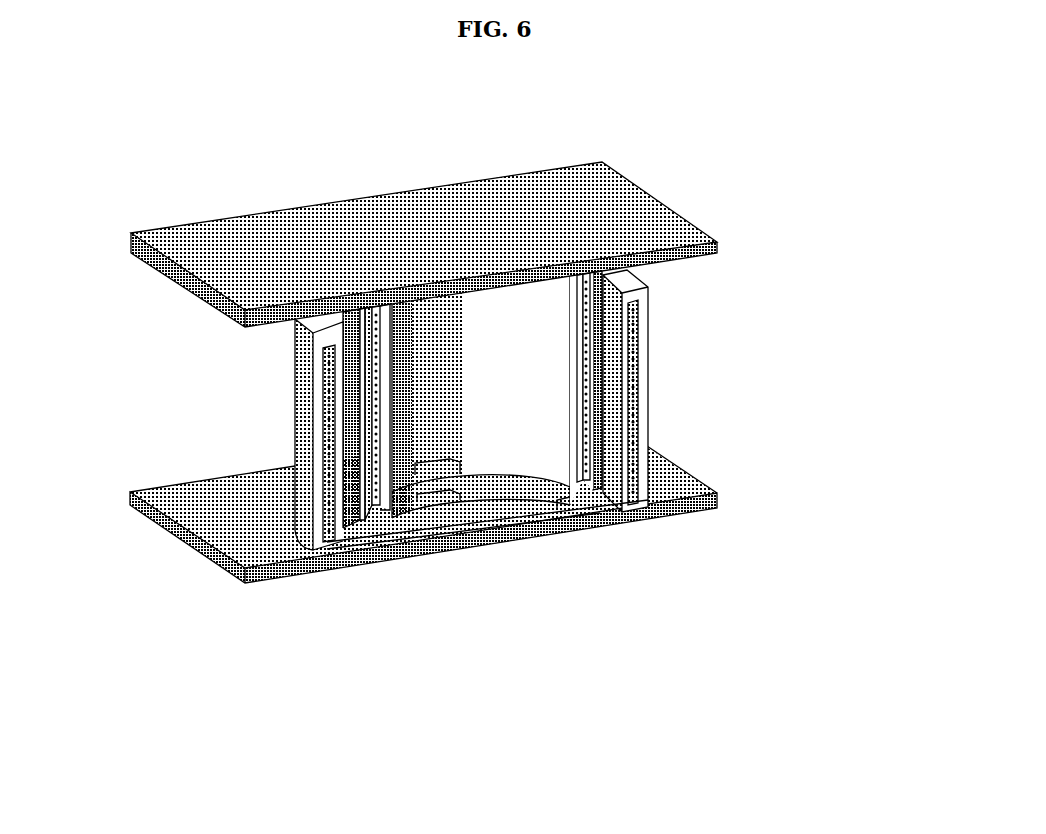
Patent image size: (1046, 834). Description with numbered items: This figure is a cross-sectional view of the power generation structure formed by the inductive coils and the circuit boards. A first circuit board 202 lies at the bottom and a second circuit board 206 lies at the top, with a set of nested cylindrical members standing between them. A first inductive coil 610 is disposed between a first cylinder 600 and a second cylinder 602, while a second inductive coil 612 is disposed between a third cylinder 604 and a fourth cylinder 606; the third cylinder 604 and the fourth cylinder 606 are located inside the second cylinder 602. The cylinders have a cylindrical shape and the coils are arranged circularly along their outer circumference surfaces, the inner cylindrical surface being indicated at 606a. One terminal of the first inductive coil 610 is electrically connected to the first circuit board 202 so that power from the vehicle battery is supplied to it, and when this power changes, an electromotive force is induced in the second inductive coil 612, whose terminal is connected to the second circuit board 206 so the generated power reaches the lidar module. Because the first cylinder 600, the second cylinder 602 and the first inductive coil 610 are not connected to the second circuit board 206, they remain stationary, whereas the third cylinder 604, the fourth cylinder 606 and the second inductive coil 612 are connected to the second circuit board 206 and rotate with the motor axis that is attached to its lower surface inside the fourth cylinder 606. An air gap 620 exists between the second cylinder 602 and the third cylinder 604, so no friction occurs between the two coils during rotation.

The second circuit board 206 is at (677, 212).
The first circuit board 202 is at (717, 503).
The cylindrical contact surface 606a is at (457, 347).
The gap 620 is at (338, 318).
The first inductive coil 610 is at (327, 410).
The second inductive coil 612 is at (373, 428).
The first cylinder 600 is at (315, 548).
The second cylinder 602 is at (338, 530).
The third cylinder 604 is at (365, 520).
The fourth cylinder 606 is at (388, 510).